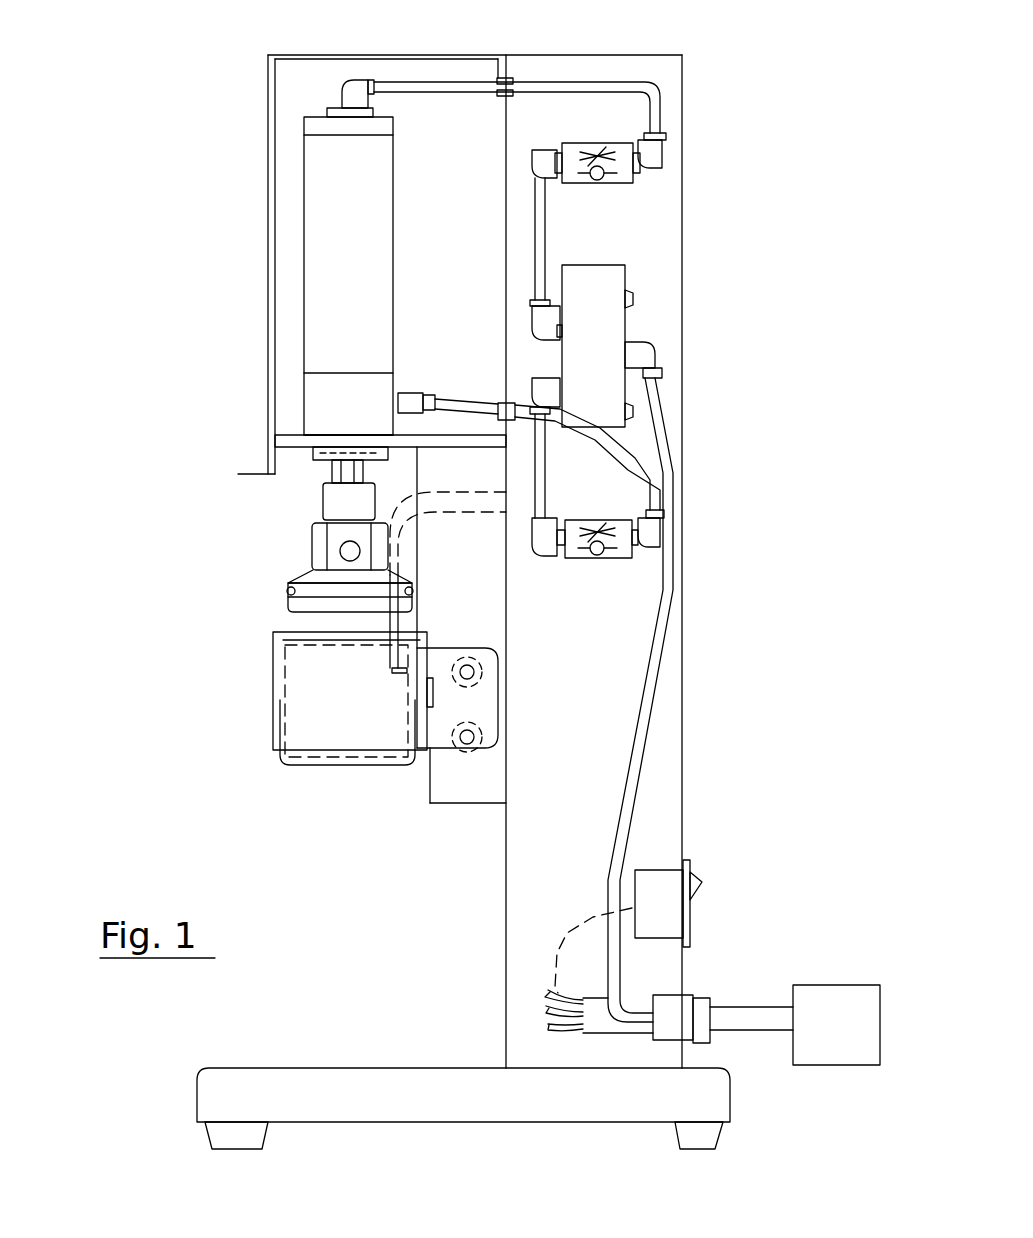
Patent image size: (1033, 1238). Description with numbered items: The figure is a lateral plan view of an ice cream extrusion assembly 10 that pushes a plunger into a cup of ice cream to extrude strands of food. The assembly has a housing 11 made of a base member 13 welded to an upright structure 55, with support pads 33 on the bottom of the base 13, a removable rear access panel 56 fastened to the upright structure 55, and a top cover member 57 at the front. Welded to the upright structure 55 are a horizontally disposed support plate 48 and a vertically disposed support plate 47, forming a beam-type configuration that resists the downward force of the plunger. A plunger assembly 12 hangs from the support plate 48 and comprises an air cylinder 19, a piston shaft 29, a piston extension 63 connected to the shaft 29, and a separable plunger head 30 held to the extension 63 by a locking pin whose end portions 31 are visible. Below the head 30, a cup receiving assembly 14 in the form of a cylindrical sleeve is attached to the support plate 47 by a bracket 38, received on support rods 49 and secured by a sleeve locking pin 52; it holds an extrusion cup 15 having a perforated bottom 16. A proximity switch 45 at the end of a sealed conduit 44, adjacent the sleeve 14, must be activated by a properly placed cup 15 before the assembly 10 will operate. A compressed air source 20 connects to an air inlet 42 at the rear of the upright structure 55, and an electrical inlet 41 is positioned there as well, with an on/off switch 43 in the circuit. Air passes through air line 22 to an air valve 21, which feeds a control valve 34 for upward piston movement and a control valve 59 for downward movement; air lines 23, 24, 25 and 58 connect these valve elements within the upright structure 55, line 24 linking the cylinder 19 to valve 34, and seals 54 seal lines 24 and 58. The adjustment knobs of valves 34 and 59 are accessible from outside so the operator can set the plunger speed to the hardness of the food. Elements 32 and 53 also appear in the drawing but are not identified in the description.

The ice cream extrusion assembly 10 is at (238, 208).
The housing assembly 11 is at (695, 148).
The plunger assembly 12 is at (208, 447).
The base member 13 is at (435, 1064).
The cup receiving assembly 14 is at (273, 705).
The extrusion cup 15 is at (275, 638).
The perforated bottom 16 is at (246, 811).
The air cylinder 19 is at (330, 180).
The compressed air source 20 is at (852, 981).
The air valve 21 is at (628, 322).
The air line 22 is at (699, 700).
The air line 23 is at (540, 232).
The air line 24 is at (568, 108).
The air line 25 is at (540, 492).
The piston shaft 29 is at (327, 406).
The plunger head 30 is at (227, 589).
The end portions 31 is at (226, 541).
The clamp ring 32 is at (239, 644).
The support pads 33 is at (262, 1140).
The control valve 34 is at (642, 188).
The bracket 38 is at (445, 715).
The electrical inlet 41 is at (752, 999).
The air inlet 42 is at (668, 972).
The on/off switch 43 is at (722, 870).
The conduit 44 is at (410, 527).
The proximity switch 45 is at (357, 638).
The vertical support plate 47 is at (509, 597).
The horizontal support plate 48 is at (285, 360).
The support rods 49 is at (467, 742).
The sleeve locking pin 52 is at (519, 713).
The flow direction 53 is at (505, 447).
The seals 54 is at (510, 78).
The upright structure 55 is at (713, 378).
The access panel 56 is at (683, 445).
The top cover member 57 is at (275, 78).
The air line 58 is at (529, 414).
The control valve 59 is at (614, 565).
The piston extension 63 is at (322, 507).